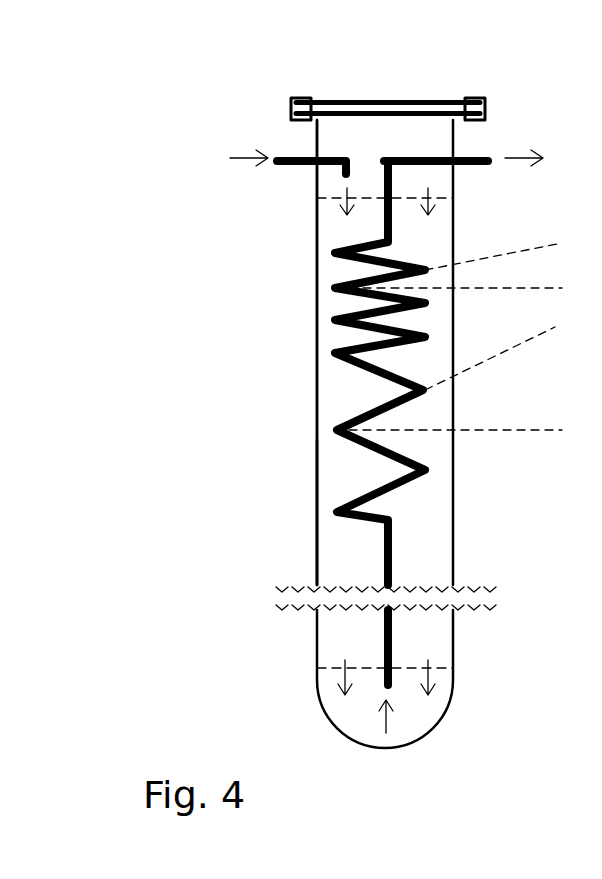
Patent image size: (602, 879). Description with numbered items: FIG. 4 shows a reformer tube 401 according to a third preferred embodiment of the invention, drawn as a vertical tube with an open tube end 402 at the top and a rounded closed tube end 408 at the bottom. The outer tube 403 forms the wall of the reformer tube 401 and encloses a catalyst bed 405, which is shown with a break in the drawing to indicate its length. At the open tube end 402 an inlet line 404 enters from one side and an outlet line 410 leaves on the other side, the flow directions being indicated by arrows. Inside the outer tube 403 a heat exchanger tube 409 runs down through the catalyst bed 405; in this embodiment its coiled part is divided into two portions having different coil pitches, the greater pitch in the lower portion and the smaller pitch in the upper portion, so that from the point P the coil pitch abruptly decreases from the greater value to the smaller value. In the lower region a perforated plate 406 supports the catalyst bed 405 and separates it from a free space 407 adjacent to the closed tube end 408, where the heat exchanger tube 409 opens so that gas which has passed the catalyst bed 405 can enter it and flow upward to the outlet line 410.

The reformer tube 401 is at (296, 470).
The open tube end 402 is at (432, 100).
The outer tube 403 is at (317, 295).
The inlet line 404 is at (317, 158).
The catalyst bed 405 is at (335, 560).
The perforated plate 406 is at (317, 668).
The free space 407 is at (402, 695).
The closed tube end 408 is at (440, 720).
The heat exchanger tube 409 is at (385, 643).
The outlet line 410 is at (462, 160).
The point P is at (335, 352).